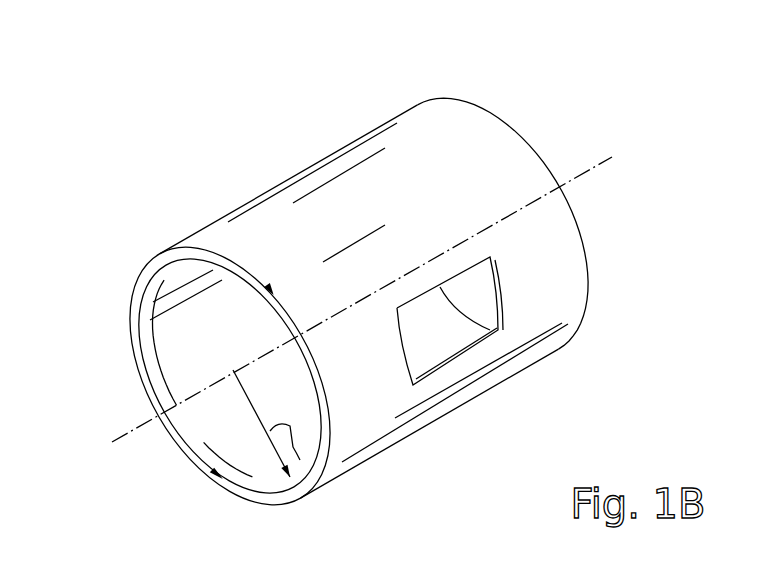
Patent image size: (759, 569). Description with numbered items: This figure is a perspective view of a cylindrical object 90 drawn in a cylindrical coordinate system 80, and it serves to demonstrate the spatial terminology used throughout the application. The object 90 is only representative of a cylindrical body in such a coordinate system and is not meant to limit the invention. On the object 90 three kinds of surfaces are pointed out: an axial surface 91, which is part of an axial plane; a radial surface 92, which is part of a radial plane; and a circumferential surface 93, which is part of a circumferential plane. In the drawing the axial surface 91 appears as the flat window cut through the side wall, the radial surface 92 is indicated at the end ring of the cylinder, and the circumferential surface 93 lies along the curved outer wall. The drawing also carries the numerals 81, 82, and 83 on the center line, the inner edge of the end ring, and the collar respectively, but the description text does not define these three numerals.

The cylindrical coordinate system 80 is at (527, 109).
The longitudinal axis 81 is at (122, 440).
The inner slot 82 is at (290, 482).
The front collar ring 83 is at (143, 277).
The cylindrical object 90 is at (398, 100).
The axial surface 91 is at (473, 345).
The radial surface 92 is at (247, 487).
The circumferential surface 93 is at (337, 197).